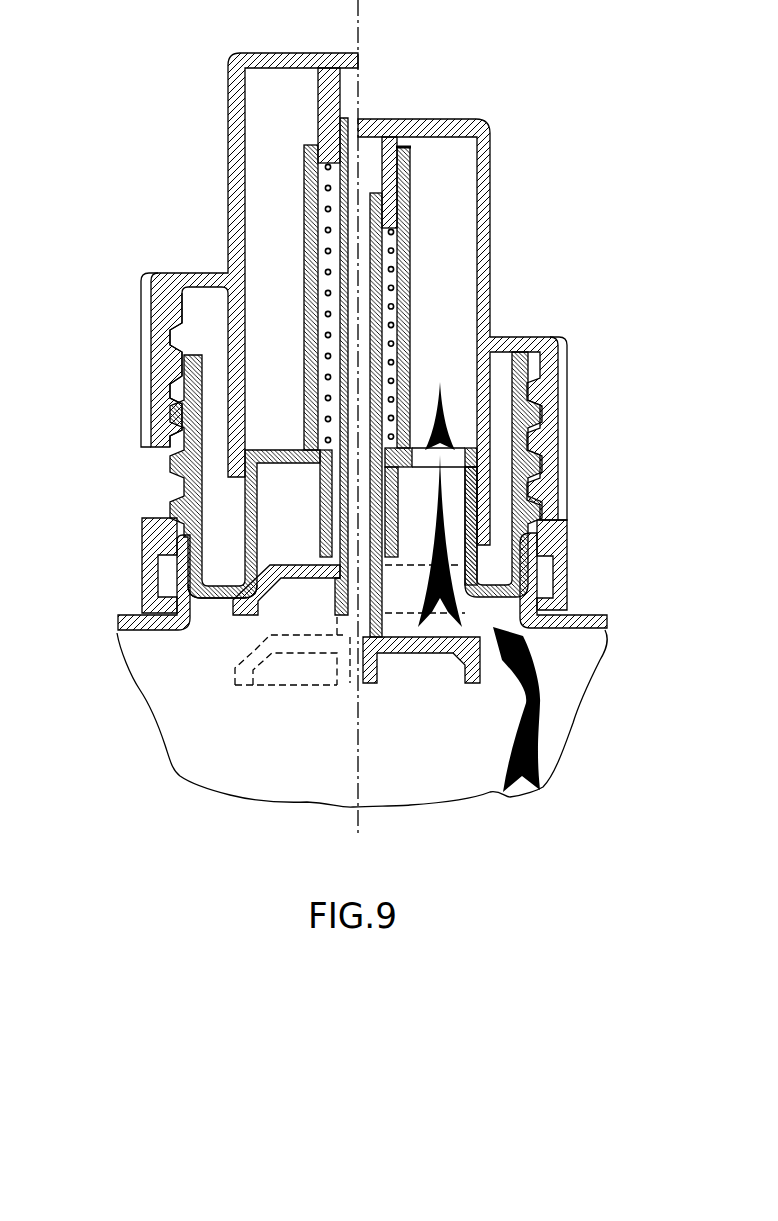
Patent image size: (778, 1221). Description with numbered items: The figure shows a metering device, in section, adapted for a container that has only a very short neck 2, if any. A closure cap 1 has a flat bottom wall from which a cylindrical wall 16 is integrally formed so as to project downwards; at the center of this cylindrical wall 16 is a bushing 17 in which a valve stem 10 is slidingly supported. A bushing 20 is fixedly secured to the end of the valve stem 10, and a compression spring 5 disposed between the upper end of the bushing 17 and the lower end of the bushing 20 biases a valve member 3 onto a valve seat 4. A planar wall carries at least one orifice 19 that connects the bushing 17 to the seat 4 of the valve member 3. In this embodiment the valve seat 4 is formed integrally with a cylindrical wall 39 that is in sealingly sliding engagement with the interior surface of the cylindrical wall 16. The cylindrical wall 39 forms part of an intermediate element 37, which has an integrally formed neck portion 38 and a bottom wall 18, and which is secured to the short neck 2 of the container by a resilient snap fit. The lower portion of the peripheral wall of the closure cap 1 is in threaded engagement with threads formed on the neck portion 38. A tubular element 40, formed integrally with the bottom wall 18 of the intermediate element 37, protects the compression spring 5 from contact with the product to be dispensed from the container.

The closure cap 1 is at (142, 277).
The short neck of a container 2 is at (548, 630).
The valve member 3 is at (233, 608).
The valve seat 4 is at (217, 600).
The compression spring 5 is at (410, 307).
The valve stem 10 is at (327, 317).
The cylindrical wall 16 is at (228, 192).
The bushing 17 is at (327, 525).
The bottom wall 18 is at (283, 452).
The orifice 19 is at (453, 460).
The bushing 20 is at (412, 167).
The intermediate element 37 is at (152, 553).
The neck portion 38 is at (177, 497).
The cylindrical wall 39 is at (473, 513).
The tubular element 40 is at (410, 278).